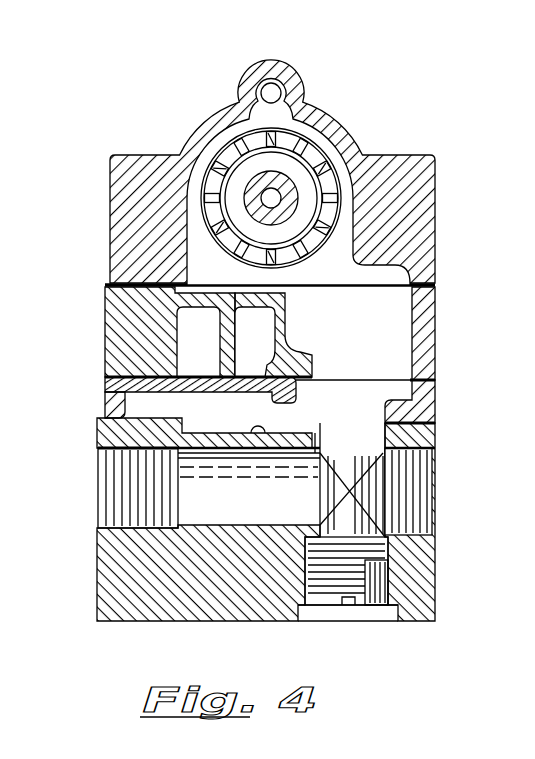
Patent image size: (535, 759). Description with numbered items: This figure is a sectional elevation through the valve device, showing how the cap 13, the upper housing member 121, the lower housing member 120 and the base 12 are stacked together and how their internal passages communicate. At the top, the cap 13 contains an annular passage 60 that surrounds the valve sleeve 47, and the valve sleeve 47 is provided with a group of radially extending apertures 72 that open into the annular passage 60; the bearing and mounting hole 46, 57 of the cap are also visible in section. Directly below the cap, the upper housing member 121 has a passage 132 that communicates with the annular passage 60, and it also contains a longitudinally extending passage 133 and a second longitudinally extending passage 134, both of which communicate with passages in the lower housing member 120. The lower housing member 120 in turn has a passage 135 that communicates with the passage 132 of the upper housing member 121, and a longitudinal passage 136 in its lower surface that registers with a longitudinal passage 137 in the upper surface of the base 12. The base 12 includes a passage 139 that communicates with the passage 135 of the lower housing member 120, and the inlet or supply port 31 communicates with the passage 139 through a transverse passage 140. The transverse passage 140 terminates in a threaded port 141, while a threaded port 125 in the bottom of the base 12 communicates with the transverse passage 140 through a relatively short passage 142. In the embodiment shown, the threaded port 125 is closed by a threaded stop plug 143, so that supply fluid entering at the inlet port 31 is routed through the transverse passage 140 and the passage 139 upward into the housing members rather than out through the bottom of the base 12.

The base 12 is at (428, 598).
The cap 13 is at (425, 226).
The inlet port 31 is at (97, 488).
The bearing inner race 46 is at (298, 165).
The valve sleeve 47 is at (328, 223).
The mounting hole 57 is at (271, 83).
The annular passage 60 is at (300, 113).
The apertures 72 is at (296, 254).
The lower housing member 120 is at (113, 388).
The upper housing member 121 is at (120, 313).
The threaded port 125 is at (333, 608).
The passage 132 is at (402, 323).
The longitudinally extending passage 133 is at (268, 360).
The second longitudinally extending passage 134 is at (202, 310).
The passage 135 is at (428, 393).
The longitudinal passage 136 is at (135, 402).
The longitudinal passage 137 is at (270, 460).
The passage 139 is at (395, 475).
The transverse passage 140 is at (247, 505).
The threaded port 141 is at (418, 515).
The passage 142 is at (320, 525).
The stop plug 143 is at (374, 604).